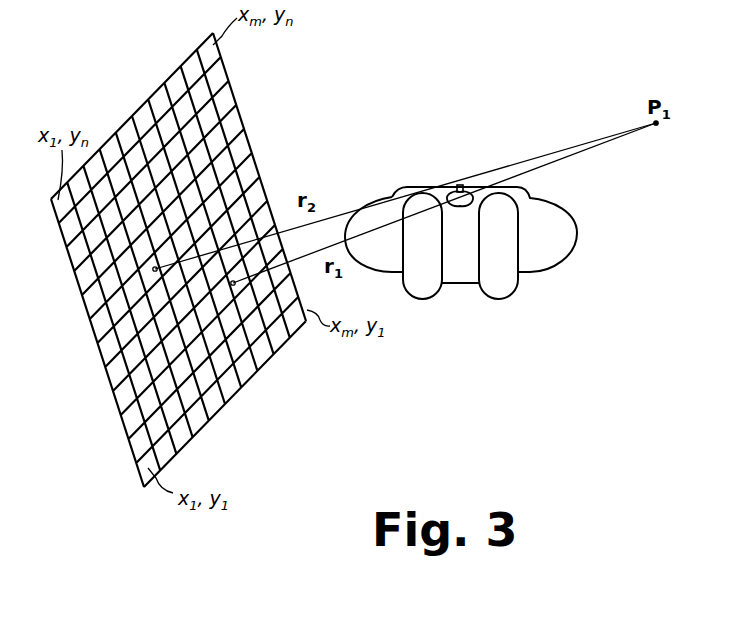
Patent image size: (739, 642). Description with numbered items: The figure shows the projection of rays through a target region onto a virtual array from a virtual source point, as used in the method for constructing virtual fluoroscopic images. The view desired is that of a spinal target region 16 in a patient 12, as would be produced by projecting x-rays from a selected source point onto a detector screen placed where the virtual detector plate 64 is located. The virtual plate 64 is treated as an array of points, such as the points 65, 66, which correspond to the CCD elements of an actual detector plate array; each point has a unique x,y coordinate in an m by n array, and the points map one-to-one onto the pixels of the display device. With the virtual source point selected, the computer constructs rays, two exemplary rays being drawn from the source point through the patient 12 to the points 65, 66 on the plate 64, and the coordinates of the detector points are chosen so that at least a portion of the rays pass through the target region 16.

The patient 12 is at (573, 225).
The spinal target region 16 is at (467, 190).
The virtual detector plate 64 is at (252, 144).
The first detector pixel 65 is at (153, 271).
The array point 66 is at (235, 286).